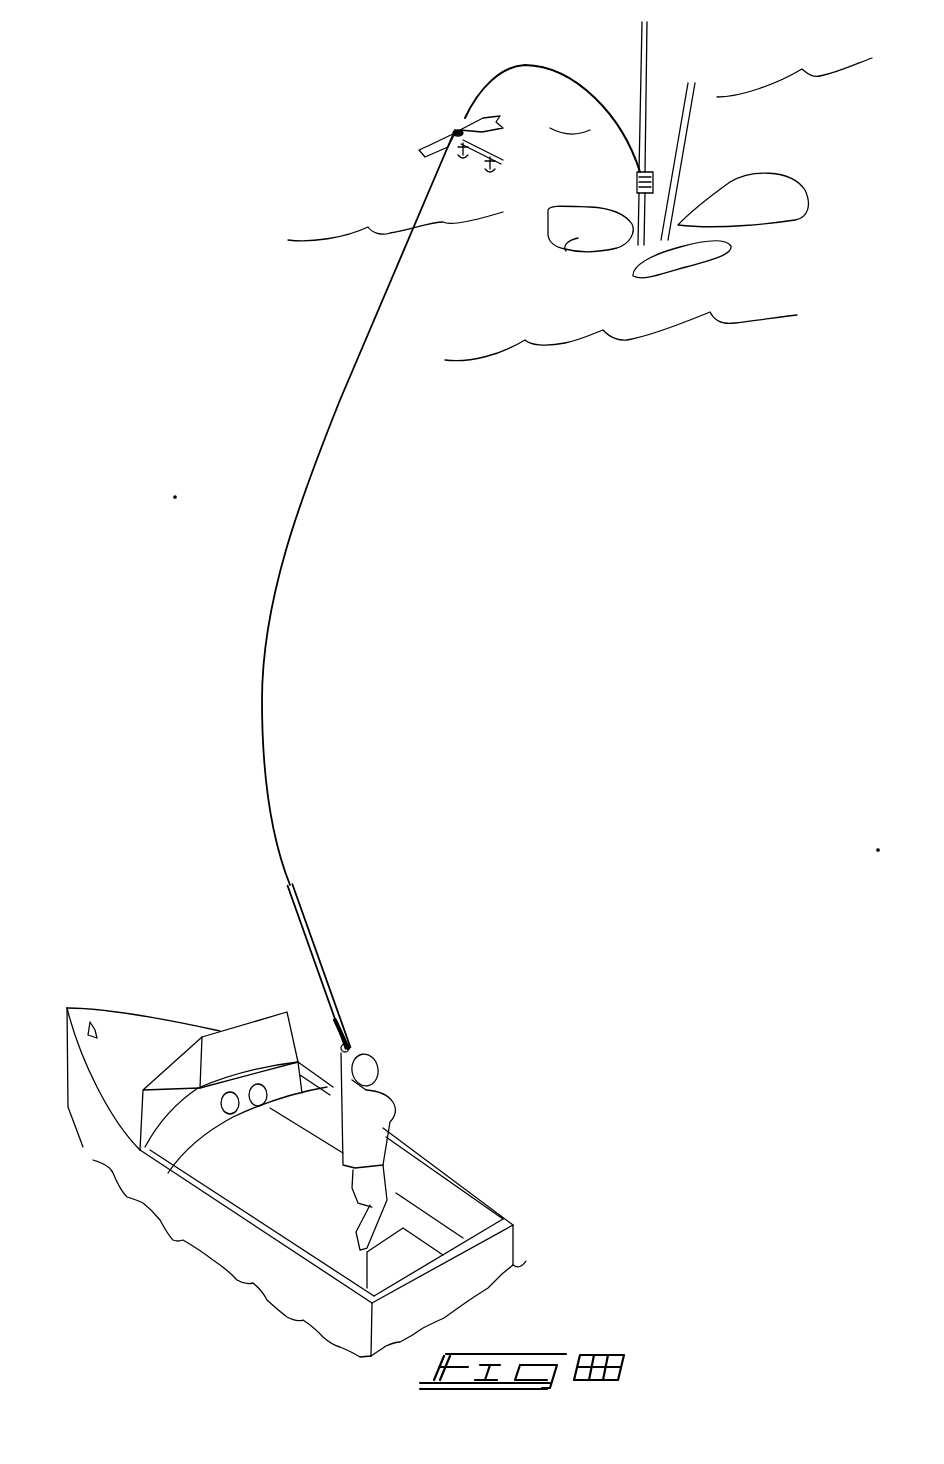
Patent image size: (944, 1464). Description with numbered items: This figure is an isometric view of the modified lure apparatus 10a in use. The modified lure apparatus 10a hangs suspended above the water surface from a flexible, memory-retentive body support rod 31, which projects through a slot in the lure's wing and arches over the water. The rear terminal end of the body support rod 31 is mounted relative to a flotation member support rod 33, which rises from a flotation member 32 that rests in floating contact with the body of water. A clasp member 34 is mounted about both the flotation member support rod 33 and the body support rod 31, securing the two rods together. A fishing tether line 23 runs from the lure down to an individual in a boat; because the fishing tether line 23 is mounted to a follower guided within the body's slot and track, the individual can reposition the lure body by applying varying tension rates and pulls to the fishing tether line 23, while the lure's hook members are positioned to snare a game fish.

The modified lure apparatus 10a is at (441, 112).
The fishing tether line 23 is at (345, 382).
The body support rod 31 is at (542, 66).
The flotation member 32 is at (563, 253).
The flotation member support rod 33 is at (648, 82).
The clasp member 34 is at (654, 176).